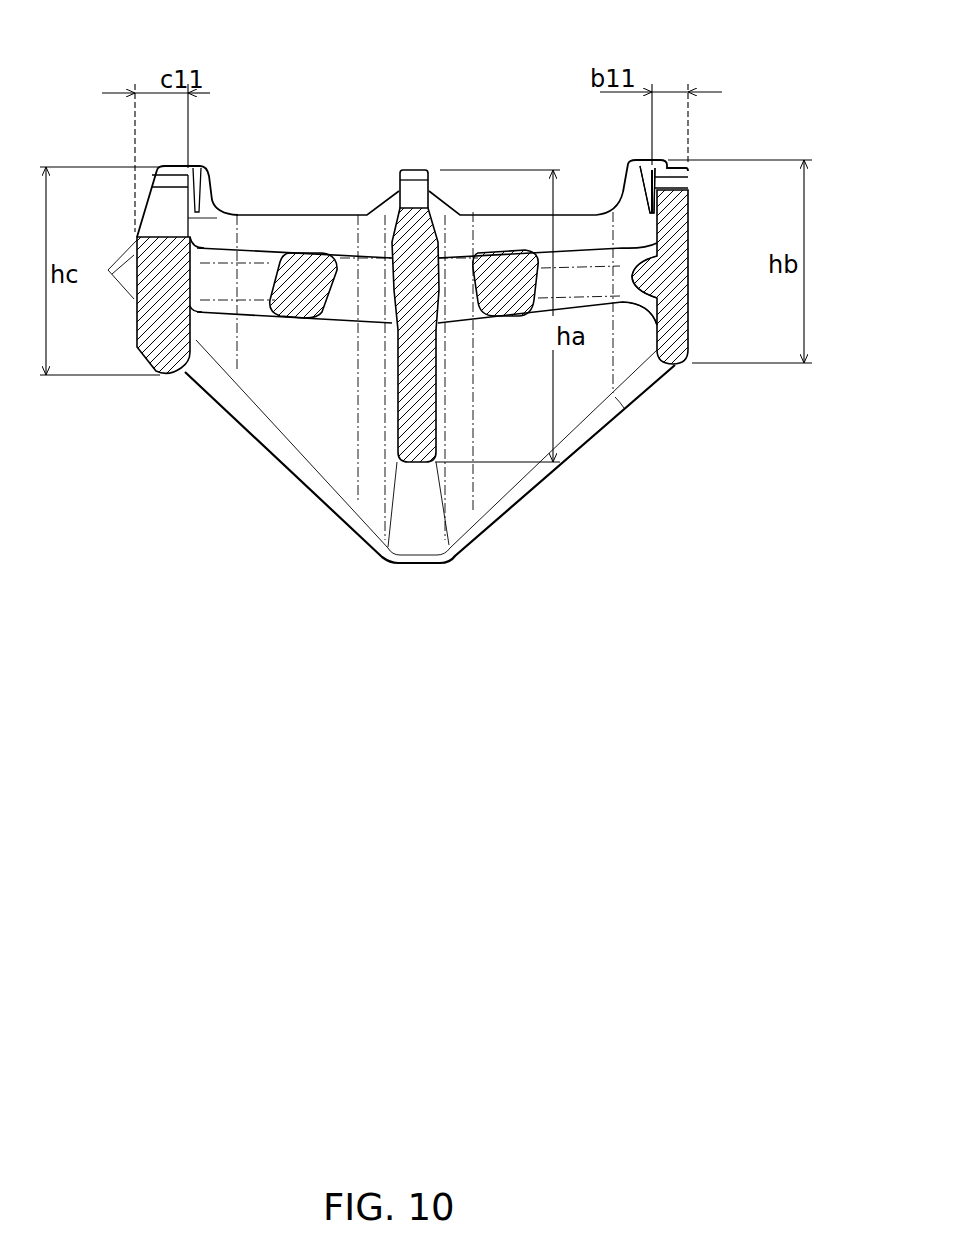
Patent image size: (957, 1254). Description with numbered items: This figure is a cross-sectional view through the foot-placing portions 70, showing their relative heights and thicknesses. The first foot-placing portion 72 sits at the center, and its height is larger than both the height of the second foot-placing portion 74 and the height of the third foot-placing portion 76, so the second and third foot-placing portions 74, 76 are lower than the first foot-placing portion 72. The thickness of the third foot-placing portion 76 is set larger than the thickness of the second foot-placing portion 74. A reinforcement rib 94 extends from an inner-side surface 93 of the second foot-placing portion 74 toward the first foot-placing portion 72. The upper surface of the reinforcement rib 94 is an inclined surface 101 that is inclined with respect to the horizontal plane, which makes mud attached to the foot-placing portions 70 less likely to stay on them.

The foot-placing portions 70 is at (683, 148).
The first foot-placing portion 72 is at (418, 455).
The second foot-placing portion 74 is at (676, 366).
The third foot-placing portion 76 is at (172, 345).
The inner-side surface 93 is at (660, 340).
The reinforcement rib 94 is at (637, 240).
The inclined surface 101 is at (633, 270).